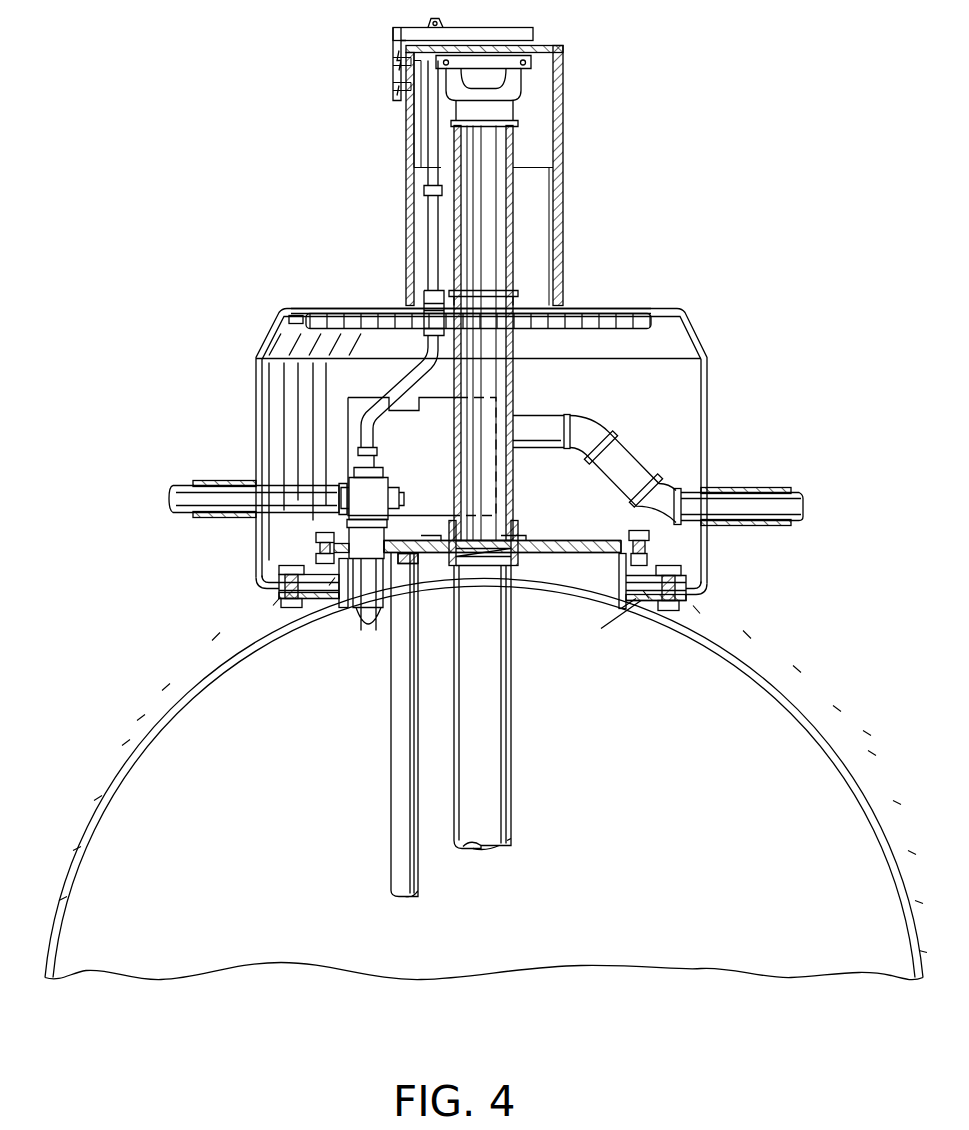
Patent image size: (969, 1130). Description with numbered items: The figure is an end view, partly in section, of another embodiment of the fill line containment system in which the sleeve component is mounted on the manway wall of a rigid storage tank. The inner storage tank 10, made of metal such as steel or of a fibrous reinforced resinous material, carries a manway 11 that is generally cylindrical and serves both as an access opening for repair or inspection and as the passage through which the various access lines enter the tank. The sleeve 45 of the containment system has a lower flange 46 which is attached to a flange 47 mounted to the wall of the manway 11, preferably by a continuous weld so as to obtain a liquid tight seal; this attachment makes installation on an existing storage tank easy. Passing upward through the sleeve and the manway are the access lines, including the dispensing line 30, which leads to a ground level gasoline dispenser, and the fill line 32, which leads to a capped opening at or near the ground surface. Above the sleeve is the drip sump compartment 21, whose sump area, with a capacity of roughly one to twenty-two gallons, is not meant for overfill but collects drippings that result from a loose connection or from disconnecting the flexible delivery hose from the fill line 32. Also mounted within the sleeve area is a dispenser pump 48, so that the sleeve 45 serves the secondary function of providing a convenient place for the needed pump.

The inner storage tank 10 is at (778, 688).
The manway 11 is at (618, 576).
The drip sump compartment 21 is at (568, 206).
The dispensing line 30 is at (803, 490).
The fill line 32 is at (526, 257).
The sleeve 45 is at (705, 384).
The lower flange 46 is at (700, 590).
The flange 47 is at (636, 606).
The dispenser pump 48 is at (432, 451).